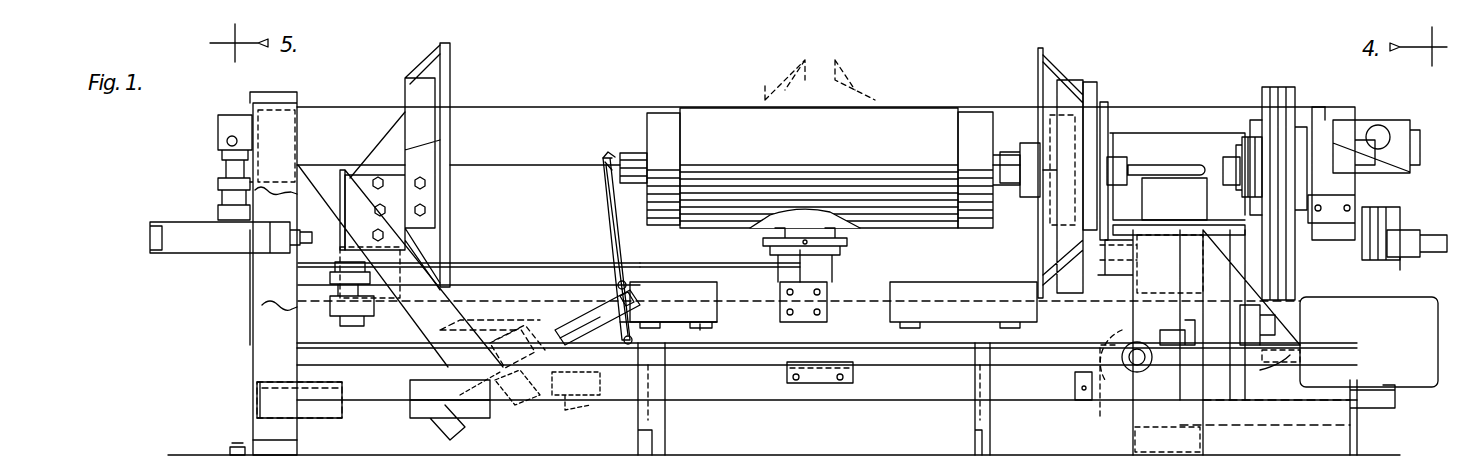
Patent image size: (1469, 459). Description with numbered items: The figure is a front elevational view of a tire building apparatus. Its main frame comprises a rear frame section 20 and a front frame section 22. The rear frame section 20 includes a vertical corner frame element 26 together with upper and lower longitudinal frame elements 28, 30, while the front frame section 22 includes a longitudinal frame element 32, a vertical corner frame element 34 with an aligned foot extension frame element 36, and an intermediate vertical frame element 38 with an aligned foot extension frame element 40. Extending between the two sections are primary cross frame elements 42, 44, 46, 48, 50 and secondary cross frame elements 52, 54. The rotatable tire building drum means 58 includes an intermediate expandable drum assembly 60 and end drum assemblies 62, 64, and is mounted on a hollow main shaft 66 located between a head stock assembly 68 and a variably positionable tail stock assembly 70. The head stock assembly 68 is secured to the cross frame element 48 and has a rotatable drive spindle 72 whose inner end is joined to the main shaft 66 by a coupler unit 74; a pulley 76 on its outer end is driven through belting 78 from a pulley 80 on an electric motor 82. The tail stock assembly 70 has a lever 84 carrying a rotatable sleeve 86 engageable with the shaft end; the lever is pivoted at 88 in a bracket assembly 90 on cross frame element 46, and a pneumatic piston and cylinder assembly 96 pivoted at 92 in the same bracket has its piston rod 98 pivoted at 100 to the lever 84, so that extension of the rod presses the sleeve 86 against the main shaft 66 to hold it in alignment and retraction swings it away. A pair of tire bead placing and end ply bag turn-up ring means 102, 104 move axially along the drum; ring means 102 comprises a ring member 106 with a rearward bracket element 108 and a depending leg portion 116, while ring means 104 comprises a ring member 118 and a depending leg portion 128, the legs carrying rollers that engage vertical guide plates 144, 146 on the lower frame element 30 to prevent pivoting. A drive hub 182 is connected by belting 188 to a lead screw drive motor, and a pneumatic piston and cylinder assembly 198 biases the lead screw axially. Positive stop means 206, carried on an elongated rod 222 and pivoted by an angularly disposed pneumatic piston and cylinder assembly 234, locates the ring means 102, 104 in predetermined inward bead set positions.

The rear frame section 20 is at (588, 105).
The front frame section 22 is at (779, 379).
The vertical corner frame element 26 is at (1323, 115).
The upper longitudinal frame element 28 is at (495, 108).
The lower longitudinal frame element 30 is at (855, 308).
The longitudinal frame element 32 is at (885, 388).
The vertical corner frame element 34 is at (258, 307).
The foot extension frame element 36 is at (285, 432).
The intermediate vertical frame element 38 is at (1120, 333).
The foot extension frame element 40 is at (1195, 413).
The primary cross frame element 42 is at (272, 160).
The primary cross frame element 44 is at (252, 398).
The primary cross frame element 46 is at (563, 410).
The primary cross frame element 48 is at (1180, 298).
The primary cross frame element 50 is at (1133, 422).
The secondary cross frame element 52 is at (665, 412).
The secondary cross frame element 54 is at (975, 410).
The rotatable tire building drum means 58 is at (749, 94).
The intermediate expandable drum assembly 60 is at (709, 120).
The end drum assembly 62 is at (666, 120).
The end drum assembly 64 is at (980, 121).
The hollow main shaft 66 is at (634, 155).
The head stock assembly 68 is at (1170, 122).
The tail stock assembly 70 is at (594, 217).
The drive spindle 72 is at (1245, 150).
The coupler unit 74 is at (1026, 140).
The pulley 76 is at (1262, 100).
The belting 78 is at (1282, 85).
The pulley 80 is at (1258, 375).
The electric motor 82 is at (1403, 342).
The lever 84 is at (612, 236).
The sleeve 86 is at (606, 155).
The pivot 88 is at (622, 336).
The bracket assembly 90 is at (536, 331).
The pivot 92 is at (505, 406).
The pneumatic piston and cylinder assembly 96 is at (470, 430).
The piston rod 98 is at (578, 314).
The pivot 100 is at (636, 292).
The tire bead placing and end ply bag turn-up ring means 102 is at (464, 51).
The tire bead placing and end ply bag turn-up ring means 104 is at (1026, 35).
The tire bead placing and end ply bag turn-up ring member 106 is at (447, 198).
The bracket element 108 is at (385, 152).
The depending leg portion 116 is at (305, 282).
The tire bead placing and end ply bag turn-up ring member 118 is at (1046, 58).
The depending leg portion 128 is at (1133, 258).
The vertical guide plate 144 is at (710, 312).
The vertical guide plate 146 is at (955, 285).
The drive hub 182 is at (1392, 262).
The belting 188 is at (1375, 205).
The pneumatic piston and cylinder assembly 198 is at (191, 215).
The positive stop means 206 is at (866, 251).
The elongated rod 222 is at (700, 262).
The pneumatic piston and cylinder assembly 234 is at (208, 195).